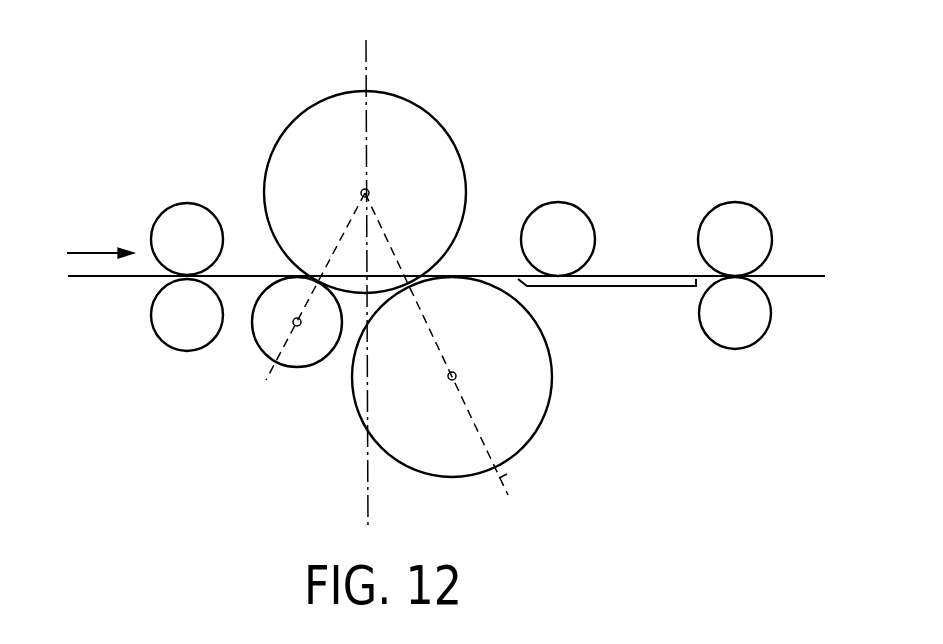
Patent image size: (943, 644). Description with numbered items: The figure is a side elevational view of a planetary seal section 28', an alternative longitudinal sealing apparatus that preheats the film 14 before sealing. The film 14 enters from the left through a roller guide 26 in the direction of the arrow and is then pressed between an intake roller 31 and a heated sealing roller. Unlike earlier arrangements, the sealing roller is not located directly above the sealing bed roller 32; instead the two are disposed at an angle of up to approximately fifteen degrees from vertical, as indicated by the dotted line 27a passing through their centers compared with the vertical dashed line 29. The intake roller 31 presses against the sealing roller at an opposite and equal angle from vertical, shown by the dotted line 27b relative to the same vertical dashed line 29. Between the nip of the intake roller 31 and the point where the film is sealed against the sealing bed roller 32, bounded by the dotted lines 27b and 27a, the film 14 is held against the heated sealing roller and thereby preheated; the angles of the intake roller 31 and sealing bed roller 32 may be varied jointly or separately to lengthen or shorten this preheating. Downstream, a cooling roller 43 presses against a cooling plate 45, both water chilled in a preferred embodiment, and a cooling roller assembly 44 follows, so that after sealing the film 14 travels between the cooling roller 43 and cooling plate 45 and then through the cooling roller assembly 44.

The film 14 is at (122, 280).
The planetary seal section 28' is at (210, 47).
The vertical dashed line 29 is at (370, 66).
The dotted line 27a is at (507, 470).
The dotted line 27b is at (338, 248).
The roller guide 26 is at (170, 212).
The intake roller 31 is at (304, 356).
The sealing bed roller 32 is at (551, 392).
The cooling roller 43 is at (570, 220).
The cooling roller assembly 44 is at (753, 212).
The cooling plate 45 is at (625, 288).